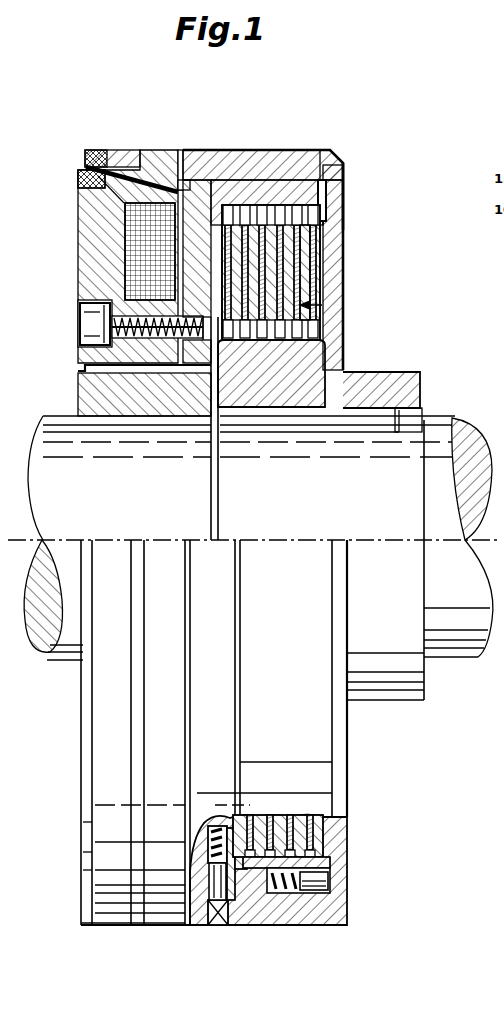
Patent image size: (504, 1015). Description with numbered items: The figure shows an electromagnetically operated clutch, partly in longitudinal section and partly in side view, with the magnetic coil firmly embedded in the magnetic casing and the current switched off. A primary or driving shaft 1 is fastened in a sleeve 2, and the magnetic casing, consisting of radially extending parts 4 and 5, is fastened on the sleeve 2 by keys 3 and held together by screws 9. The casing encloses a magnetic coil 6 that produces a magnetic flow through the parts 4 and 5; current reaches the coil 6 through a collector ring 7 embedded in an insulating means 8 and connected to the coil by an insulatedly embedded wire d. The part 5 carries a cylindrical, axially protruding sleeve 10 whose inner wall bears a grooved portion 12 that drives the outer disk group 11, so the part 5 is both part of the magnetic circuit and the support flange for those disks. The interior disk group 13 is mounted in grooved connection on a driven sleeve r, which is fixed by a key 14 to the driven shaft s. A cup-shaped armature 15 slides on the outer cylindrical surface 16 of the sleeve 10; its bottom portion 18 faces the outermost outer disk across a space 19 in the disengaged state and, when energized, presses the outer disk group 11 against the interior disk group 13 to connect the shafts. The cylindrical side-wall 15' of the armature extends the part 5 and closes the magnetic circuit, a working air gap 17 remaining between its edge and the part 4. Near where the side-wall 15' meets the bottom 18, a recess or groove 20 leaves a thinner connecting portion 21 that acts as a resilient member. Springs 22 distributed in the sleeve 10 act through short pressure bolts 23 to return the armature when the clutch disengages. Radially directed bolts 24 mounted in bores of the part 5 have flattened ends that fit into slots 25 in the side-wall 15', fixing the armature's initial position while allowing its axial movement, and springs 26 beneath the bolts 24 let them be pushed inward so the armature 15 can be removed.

The primary shaft 1 is at (65, 647).
The sleeve 2 is at (96, 400).
The keys 3 is at (84, 369).
The radially extending part of the magnetic casing 4 is at (96, 268).
The radially extending part of the magnetic casing 5 is at (208, 185).
The magnetic coil 6 is at (140, 236).
The collector ring 7 is at (88, 157).
The insulating means 8 is at (79, 177).
The screws 9 is at (95, 321).
The sleeve 10 is at (296, 185).
The outer disk group 11 is at (345, 165).
The grooved portion 12 is at (270, 185).
The interior disk group 13 is at (321, 283).
The key 14 is at (322, 338).
The cup-shaped armature 15 is at (280, 232).
The cylindrical side-wall 15' is at (263, 137).
The outer cylindrical surface 16 is at (321, 152).
The working air gap 17 is at (181, 150).
The bottom portion 18 is at (330, 262).
The space 19 is at (322, 306).
The recess or groove 20 is at (327, 196).
The connecting portion 21 is at (344, 213).
The springs 22 is at (281, 892).
The pressure bolts 23 is at (313, 884).
The radially directed bolts 24 is at (216, 927).
The slots 25 is at (236, 927).
The springs 26 is at (190, 882).
The wire d is at (147, 180).
The driven sleeve r is at (403, 388).
The step s is at (446, 432).